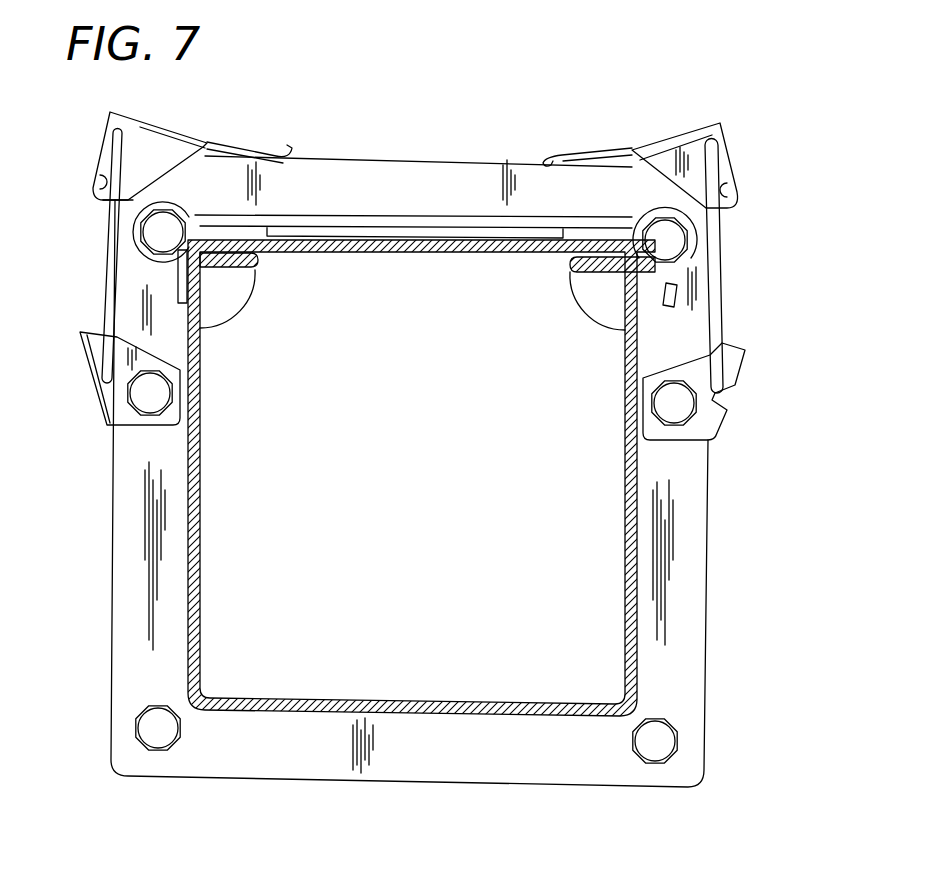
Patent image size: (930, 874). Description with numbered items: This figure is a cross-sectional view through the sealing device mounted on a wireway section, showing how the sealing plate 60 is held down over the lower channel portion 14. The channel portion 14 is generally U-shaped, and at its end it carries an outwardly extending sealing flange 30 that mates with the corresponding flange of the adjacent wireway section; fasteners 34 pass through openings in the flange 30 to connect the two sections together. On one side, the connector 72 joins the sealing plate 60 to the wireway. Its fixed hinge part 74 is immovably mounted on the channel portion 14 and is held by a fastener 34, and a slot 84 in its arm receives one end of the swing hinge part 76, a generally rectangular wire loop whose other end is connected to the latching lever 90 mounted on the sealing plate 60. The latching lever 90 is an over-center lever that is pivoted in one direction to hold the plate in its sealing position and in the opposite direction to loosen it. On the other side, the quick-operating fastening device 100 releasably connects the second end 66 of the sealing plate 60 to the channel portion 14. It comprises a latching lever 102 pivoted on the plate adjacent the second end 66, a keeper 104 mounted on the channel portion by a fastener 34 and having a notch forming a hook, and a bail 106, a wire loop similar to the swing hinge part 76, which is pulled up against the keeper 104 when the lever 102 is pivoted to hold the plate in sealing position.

The lower channel portion 14 is at (693, 500).
The sealing flange 30 is at (157, 730).
The fastener 34 is at (657, 742).
The sealing plate 60 is at (465, 168).
The second end 66 is at (682, 215).
The connector 72 is at (190, 110).
The fixed hinge part 74 is at (120, 408).
The swing hinge part 76 is at (110, 296).
The slot 84 is at (114, 381).
The latching lever 90 is at (228, 146).
The quick-operating fastening device 100 is at (700, 115).
The latching lever 102 is at (650, 148).
The keeper 104 is at (718, 418).
The bail 106 is at (720, 279).